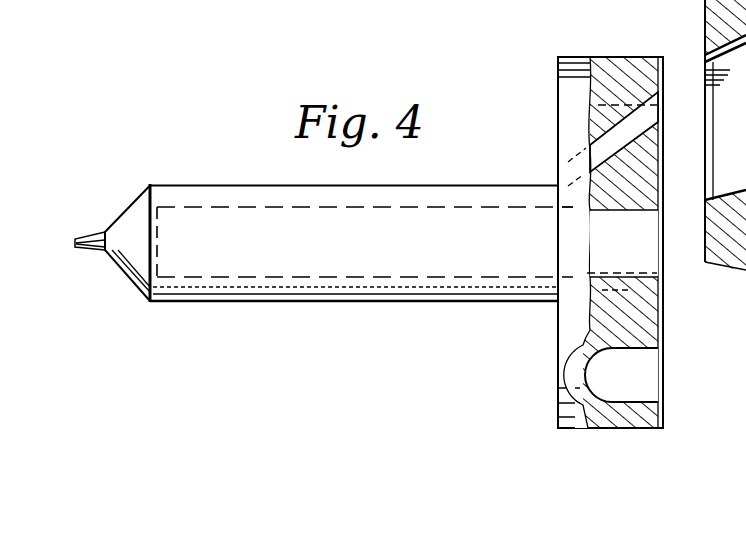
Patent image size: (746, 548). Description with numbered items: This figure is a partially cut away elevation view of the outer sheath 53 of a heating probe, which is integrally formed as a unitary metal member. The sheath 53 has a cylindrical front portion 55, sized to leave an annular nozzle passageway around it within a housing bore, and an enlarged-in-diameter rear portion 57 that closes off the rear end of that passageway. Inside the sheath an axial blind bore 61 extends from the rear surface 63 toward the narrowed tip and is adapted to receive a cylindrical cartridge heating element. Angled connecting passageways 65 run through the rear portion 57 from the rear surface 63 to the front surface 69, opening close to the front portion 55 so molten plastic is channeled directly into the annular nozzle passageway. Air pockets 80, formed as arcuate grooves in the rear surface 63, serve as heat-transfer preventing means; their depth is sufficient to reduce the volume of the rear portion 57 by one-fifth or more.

The outer sheath 53 is at (536, 146).
The cylindrical front portion 55 is at (248, 197).
The enlarged-in-diameter rear portion 57 is at (578, 70).
The axial blind bore 61 is at (192, 214).
The rear surface 63 is at (664, 316).
The connecting passageways 65 is at (633, 118).
The front surface 69 is at (558, 350).
The air pockets 80 is at (590, 272).